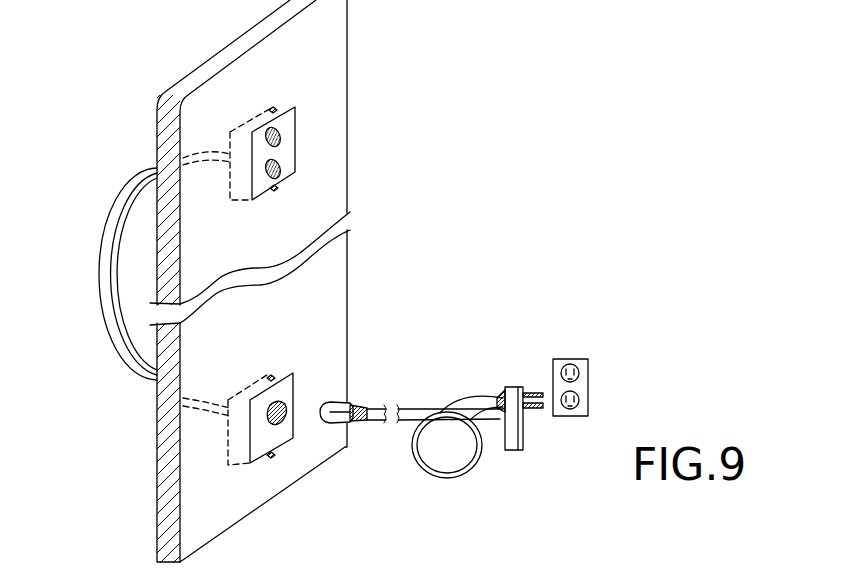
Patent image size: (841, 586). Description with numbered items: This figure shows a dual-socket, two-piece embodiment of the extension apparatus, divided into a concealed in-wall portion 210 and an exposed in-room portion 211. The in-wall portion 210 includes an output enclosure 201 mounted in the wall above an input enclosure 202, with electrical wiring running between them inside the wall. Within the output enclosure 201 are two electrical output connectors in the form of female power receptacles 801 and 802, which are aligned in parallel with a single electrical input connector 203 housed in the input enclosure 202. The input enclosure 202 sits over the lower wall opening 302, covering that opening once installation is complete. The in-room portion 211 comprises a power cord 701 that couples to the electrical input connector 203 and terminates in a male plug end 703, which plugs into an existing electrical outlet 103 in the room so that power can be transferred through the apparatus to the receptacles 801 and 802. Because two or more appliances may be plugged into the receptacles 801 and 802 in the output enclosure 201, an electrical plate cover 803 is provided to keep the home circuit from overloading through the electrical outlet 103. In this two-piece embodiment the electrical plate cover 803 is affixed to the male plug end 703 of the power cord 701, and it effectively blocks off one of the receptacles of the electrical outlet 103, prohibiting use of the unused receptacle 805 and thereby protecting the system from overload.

The in-wall portion 210 is at (72, 38).
The output enclosure 201 is at (295, 107).
The female power receptacle 801 is at (281, 134).
The female power receptacle 802 is at (281, 166).
The input enclosure 202 is at (295, 375).
The electrical input connector 203 is at (250, 463).
The lower wall opening 302 is at (287, 407).
The in-room portion 211 is at (558, 482).
The power cord 701 is at (479, 437).
The male plug end 703 is at (505, 398).
The electrical plate cover 803 is at (523, 428).
The electrical outlet 103 is at (580, 372).
The unused receptacle 805 is at (581, 400).